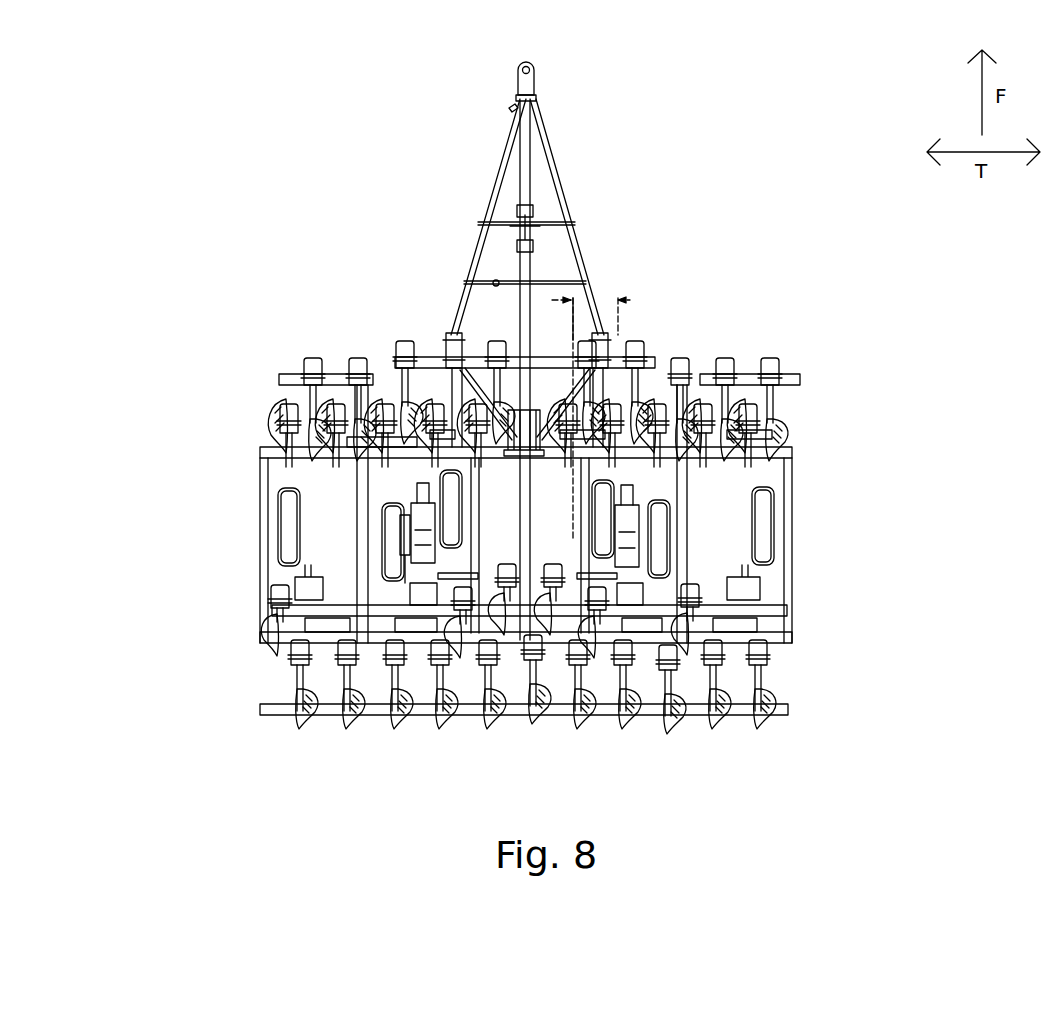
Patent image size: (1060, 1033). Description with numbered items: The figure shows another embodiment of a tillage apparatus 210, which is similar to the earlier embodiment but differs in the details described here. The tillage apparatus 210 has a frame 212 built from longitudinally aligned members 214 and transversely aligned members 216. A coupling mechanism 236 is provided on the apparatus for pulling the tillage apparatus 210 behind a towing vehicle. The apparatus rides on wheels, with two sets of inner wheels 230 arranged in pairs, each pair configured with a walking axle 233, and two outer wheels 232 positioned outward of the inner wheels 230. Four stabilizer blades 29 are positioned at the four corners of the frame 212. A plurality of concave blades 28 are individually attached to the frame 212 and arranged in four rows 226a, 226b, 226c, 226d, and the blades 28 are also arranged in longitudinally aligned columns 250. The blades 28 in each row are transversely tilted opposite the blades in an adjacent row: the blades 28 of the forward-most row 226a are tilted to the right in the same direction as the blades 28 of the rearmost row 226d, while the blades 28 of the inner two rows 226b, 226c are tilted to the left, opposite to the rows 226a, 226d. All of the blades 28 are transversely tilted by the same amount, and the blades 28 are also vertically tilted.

The tillage apparatus 210 is at (416, 268).
The coupling mechanism 236 is at (585, 252).
The longitudinally aligned columns 250 is at (614, 415).
The concave blades 28 is at (396, 334).
The stabilizer blades 29 is at (276, 421).
The forward-most row 226a is at (778, 405).
The inner row 226b is at (768, 437).
The inner row 226c is at (775, 653).
The rearmost row 226d is at (778, 701).
The transversely aligned members 216 is at (768, 452).
The longitudinally aligned members 214 is at (259, 488).
The frame 212 is at (264, 519).
The outer wheels 232 is at (285, 552).
The inner wheels 230 is at (400, 503).
The walking axle 233 is at (418, 520).